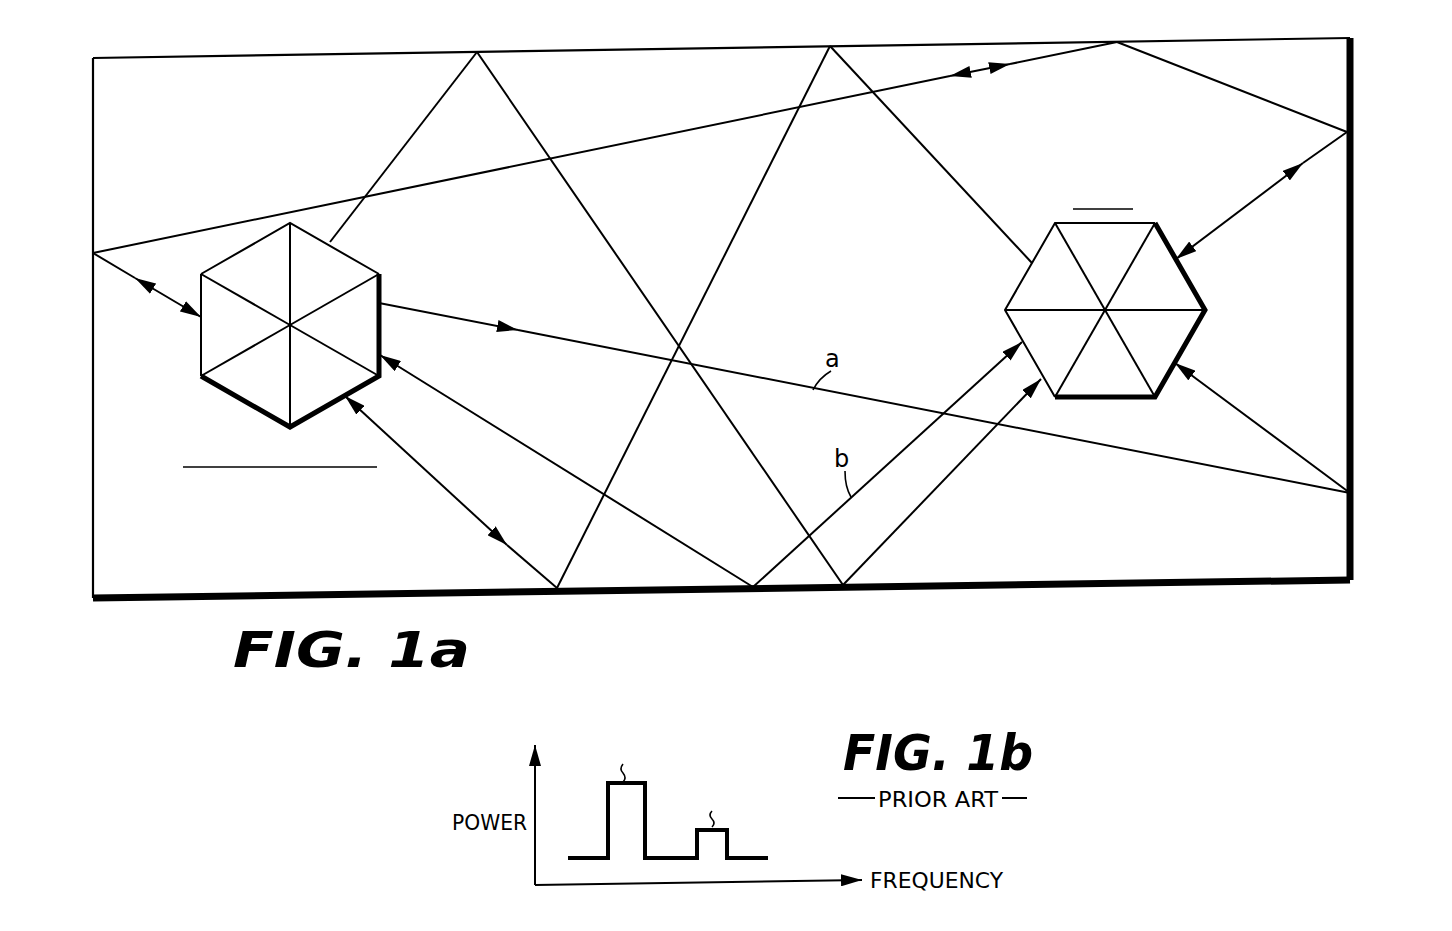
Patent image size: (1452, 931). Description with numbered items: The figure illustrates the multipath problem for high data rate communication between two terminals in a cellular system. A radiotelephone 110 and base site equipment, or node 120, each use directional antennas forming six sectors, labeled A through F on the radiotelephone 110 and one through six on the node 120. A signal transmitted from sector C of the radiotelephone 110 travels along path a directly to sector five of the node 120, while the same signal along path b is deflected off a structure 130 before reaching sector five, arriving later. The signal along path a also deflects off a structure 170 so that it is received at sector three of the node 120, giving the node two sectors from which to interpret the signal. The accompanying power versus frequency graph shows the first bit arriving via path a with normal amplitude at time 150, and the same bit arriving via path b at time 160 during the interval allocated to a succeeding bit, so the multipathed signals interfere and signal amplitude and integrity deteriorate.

In FIG. 1a, the radiotelephone 110 is at (205, 421).
In FIG. 1a, the node 120 is at (1207, 222).
In FIG. 1a, the structure 130 is at (980, 586).
In FIG. 1a, the structure 170 is at (1352, 493).
In FIG. 1b, the time 150 is at (628, 885).
In FIG. 1b, the time 160 is at (713, 884).